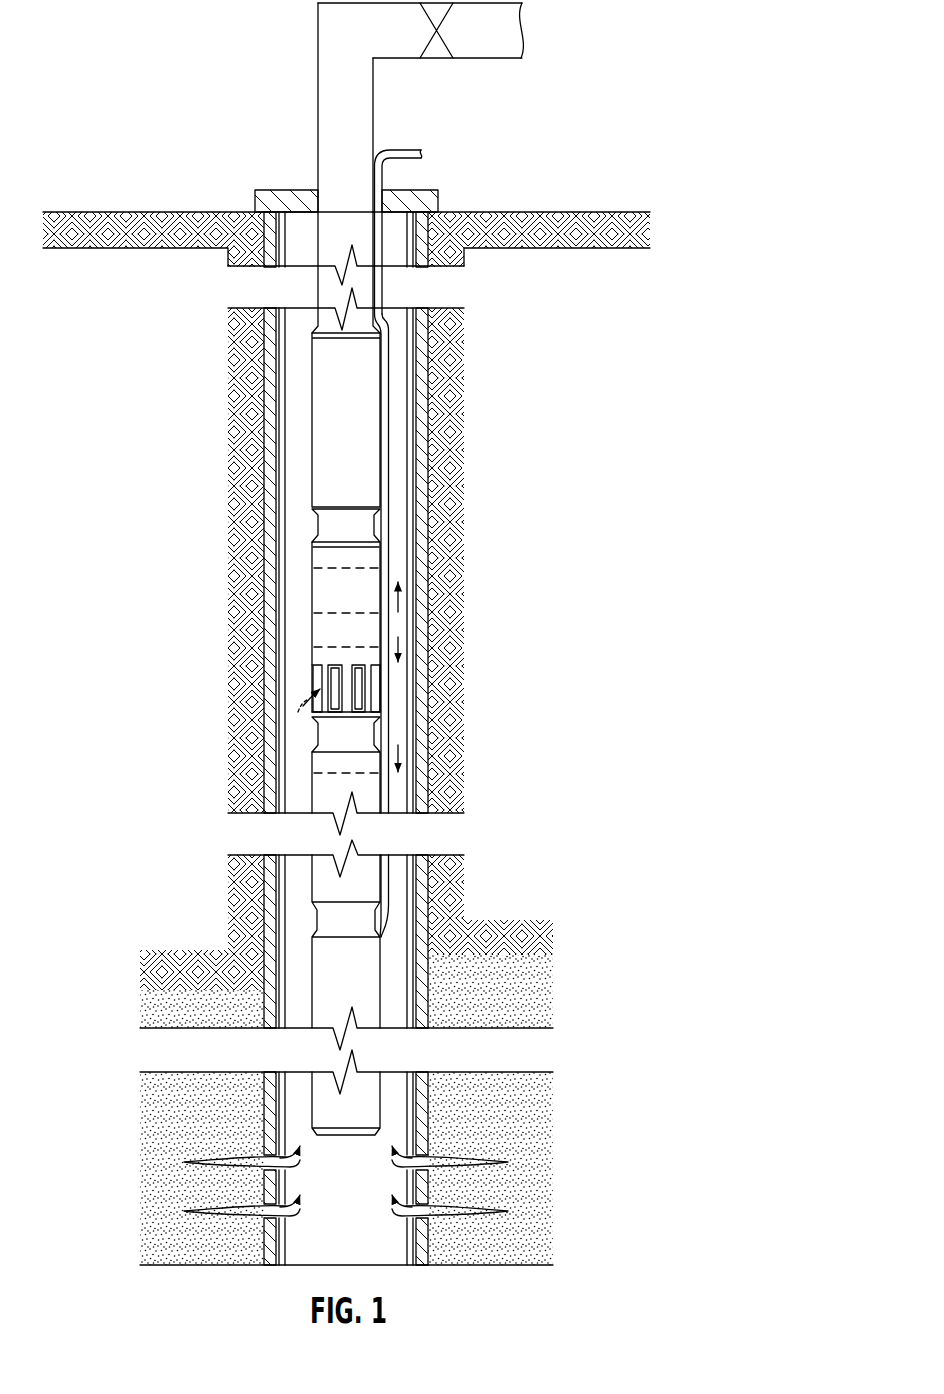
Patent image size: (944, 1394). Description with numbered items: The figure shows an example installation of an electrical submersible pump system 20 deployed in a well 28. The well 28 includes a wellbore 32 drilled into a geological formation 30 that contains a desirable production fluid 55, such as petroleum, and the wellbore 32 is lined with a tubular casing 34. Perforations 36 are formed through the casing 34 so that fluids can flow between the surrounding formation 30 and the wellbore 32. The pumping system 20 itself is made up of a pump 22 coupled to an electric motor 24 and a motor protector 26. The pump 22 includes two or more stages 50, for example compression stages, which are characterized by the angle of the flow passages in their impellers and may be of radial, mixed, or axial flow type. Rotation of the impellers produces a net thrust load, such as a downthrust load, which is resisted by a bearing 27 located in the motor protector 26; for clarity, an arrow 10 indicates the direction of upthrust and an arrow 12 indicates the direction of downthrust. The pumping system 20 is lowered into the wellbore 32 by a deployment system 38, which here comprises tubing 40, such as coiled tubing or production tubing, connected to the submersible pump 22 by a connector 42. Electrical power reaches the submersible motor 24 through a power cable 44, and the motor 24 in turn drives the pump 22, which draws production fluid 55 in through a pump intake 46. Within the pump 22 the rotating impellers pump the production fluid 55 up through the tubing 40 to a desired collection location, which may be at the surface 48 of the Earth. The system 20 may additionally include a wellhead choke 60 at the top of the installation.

The arrow indicating direction of upthrust 10 is at (400, 592).
The arrow indicating direction of downthrust 12 is at (400, 655).
The electrical submersible pump system 20 is at (439, 153).
The pump 22 is at (307, 560).
The electric motor 24 is at (354, 970).
The motor protector 26 is at (325, 803).
The bearing 27 is at (325, 768).
The well 28 is at (449, 343).
The geological formation 30 is at (531, 997).
The wellbore 32 is at (400, 765).
The tubular casing 34 is at (266, 413).
The perforations 36 is at (509, 1161).
The deployment system 38 is at (311, 115).
The tubing 40 is at (337, 162).
The connector 42 is at (346, 435).
The power cable 44 is at (391, 490).
The pump intake 46 is at (312, 667).
The surface of the Earth 48 is at (131, 212).
The pump stages 50 is at (322, 598).
The production fluid 55 is at (297, 702).
The wellhead choke 60 is at (464, 29).